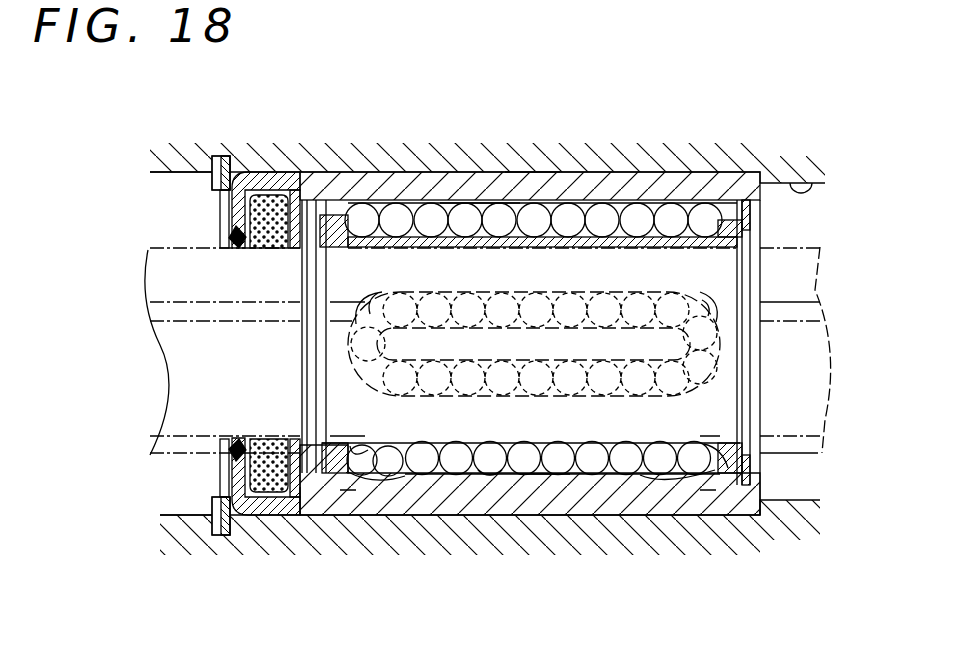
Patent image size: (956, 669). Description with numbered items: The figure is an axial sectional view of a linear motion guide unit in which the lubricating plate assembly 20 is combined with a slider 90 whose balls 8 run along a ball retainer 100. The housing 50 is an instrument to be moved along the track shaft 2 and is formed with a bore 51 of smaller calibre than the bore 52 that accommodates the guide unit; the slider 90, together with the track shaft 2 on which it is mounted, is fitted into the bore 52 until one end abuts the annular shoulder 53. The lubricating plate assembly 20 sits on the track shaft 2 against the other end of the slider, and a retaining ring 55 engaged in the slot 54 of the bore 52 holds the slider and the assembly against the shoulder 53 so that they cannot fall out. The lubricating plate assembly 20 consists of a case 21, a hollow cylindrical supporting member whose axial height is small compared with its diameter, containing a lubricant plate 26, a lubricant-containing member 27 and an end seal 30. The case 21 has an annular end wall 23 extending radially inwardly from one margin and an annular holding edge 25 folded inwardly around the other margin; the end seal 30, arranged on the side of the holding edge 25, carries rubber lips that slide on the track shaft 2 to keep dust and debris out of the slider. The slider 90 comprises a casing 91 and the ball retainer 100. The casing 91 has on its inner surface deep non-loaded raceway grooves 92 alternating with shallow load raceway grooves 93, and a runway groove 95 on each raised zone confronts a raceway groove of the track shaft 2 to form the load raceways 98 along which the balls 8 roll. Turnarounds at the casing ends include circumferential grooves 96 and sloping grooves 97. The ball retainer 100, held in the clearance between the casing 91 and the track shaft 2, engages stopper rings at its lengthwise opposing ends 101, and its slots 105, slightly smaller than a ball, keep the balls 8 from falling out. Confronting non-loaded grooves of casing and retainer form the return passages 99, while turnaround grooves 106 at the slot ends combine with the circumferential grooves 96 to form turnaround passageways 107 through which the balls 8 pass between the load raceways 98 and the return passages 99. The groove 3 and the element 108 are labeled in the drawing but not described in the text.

The track shaft 2 is at (812, 360).
The shaft groove 3 is at (813, 306).
The balls 8 is at (440, 205).
The lubricating plate assembly 20 is at (224, 347).
The case 21 is at (268, 182).
The annular end wall 23 is at (296, 250).
The annular holding edge 25 is at (218, 196).
The lubricant plate 26 is at (266, 239).
The lubricant-containing member 27 is at (265, 437).
The end seal 30 is at (222, 238).
The housing 50 is at (783, 167).
The bore 51 is at (805, 183).
The bore 52 is at (583, 177).
The annular shoulder 53 is at (755, 170).
The slot 54 is at (218, 157).
The retaining ring 55 is at (193, 153).
The slider 90 is at (518, 172).
The casing 91 is at (664, 190).
The non-loaded raceway grooves 92 is at (627, 203).
The load raceway grooves 93 is at (530, 292).
The runway groove 95 is at (452, 471).
The circumferential grooves 96 is at (375, 484).
The sloping grooves 97 is at (399, 478).
The load raceways 98 is at (493, 293).
The return passages 99 is at (416, 204).
The ball retainer 100 is at (481, 203).
The lengthwise opposing ends 101 is at (331, 224).
The slot 105 is at (545, 478).
The turnaround grooves 106 is at (372, 314).
The turnaround passageways 107 is at (348, 490).
The sleeve end 108 is at (304, 497).